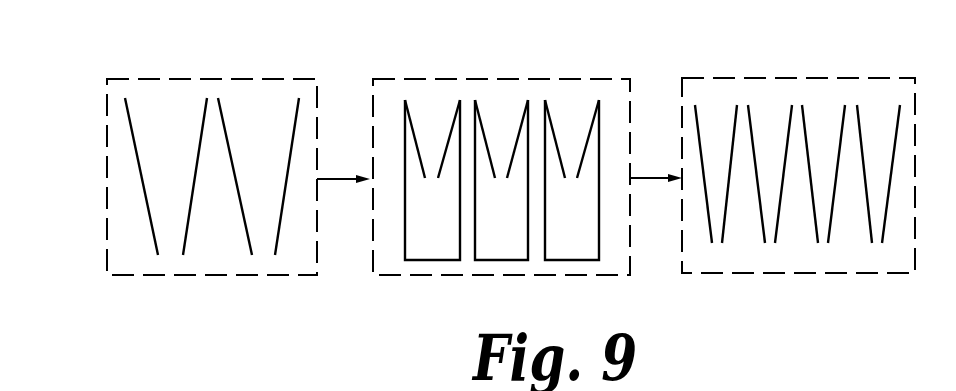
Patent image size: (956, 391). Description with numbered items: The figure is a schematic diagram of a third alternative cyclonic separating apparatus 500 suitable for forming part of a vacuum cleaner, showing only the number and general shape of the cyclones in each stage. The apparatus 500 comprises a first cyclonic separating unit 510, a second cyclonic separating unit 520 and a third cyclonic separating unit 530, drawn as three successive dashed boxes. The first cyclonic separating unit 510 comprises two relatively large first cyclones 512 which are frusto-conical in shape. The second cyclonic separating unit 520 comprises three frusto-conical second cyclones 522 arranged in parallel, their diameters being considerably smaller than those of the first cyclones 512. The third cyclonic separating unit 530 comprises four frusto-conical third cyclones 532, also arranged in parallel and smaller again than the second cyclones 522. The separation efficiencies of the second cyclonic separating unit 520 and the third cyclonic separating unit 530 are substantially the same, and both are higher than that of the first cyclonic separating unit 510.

The apparatus 500 is at (220, 67).
The first cyclonic separating unit 510 is at (217, 275).
The first cyclone 512 is at (150, 218).
The second cyclonic separating unit 520 is at (447, 275).
The second cyclone 522 is at (555, 120).
The third cyclonic separating unit 530 is at (760, 275).
The third cyclone 532 is at (857, 117).